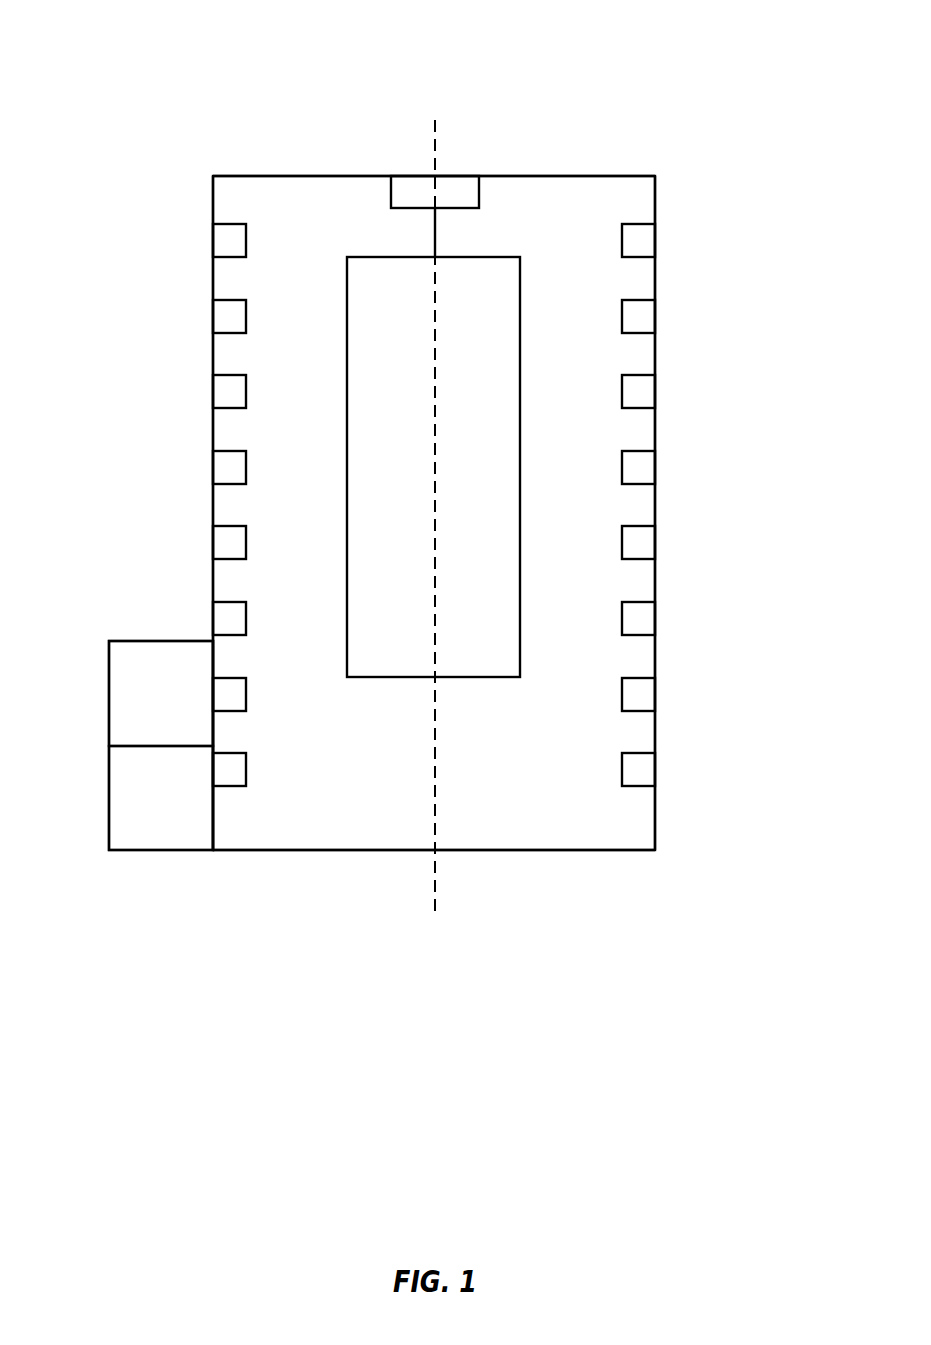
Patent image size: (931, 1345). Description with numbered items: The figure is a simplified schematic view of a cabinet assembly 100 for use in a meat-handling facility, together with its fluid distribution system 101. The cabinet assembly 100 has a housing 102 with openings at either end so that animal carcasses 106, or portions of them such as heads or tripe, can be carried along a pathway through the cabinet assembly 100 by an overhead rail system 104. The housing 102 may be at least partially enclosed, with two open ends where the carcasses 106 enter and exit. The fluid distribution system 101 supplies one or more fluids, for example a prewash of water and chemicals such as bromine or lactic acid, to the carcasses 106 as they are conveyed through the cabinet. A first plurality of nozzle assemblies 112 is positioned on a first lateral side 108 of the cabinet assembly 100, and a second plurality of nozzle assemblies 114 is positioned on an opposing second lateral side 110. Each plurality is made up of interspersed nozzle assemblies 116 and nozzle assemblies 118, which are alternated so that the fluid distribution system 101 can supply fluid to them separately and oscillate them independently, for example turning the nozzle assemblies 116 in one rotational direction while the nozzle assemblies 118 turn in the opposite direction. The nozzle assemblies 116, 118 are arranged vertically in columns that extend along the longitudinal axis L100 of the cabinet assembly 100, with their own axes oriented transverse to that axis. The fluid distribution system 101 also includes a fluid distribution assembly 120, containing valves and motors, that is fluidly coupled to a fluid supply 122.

The cabinet assembly 100 is at (150, 38).
The fluid distribution system 101 is at (118, 860).
The housing 102 is at (608, 177).
The overhead rail system 104 is at (462, 187).
The animal carcass 106 is at (487, 446).
The first lateral side 108 is at (215, 192).
The second lateral side 110 is at (657, 823).
The first plurality of nozzle assemblies 112 is at (182, 175).
The second plurality of nozzle assemblies 114 is at (700, 162).
The nozzle assembly 116 is at (233, 246).
The nozzle assembly 118 is at (228, 322).
The fluid distribution assembly 120 is at (180, 708).
The fluid supply 122 is at (180, 803).
The longitudinal axis L100 is at (434, 878).